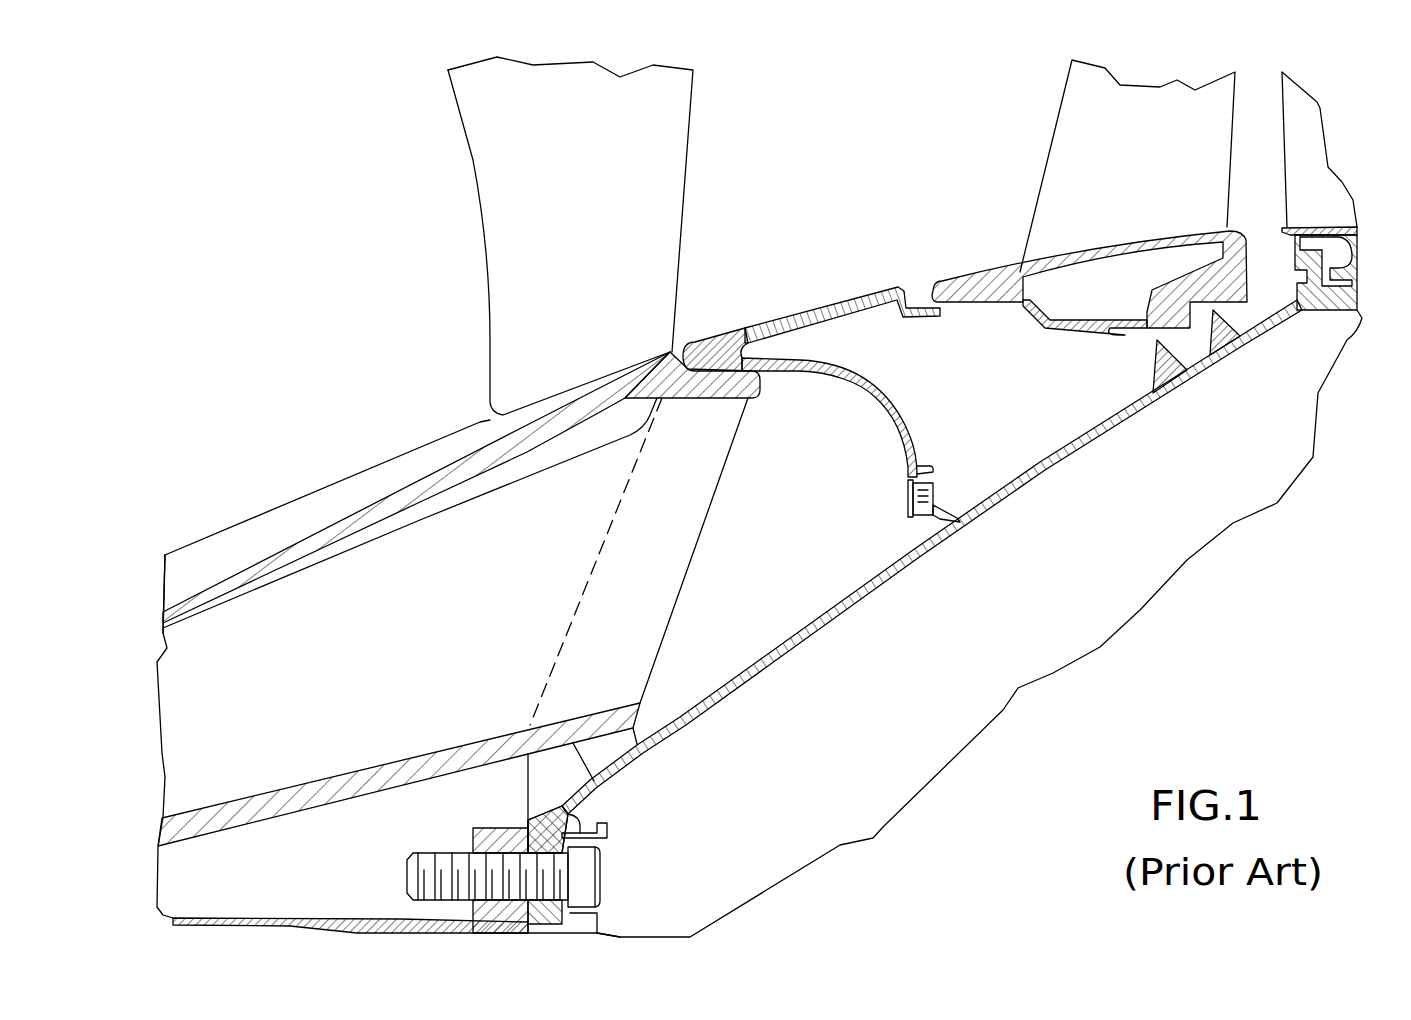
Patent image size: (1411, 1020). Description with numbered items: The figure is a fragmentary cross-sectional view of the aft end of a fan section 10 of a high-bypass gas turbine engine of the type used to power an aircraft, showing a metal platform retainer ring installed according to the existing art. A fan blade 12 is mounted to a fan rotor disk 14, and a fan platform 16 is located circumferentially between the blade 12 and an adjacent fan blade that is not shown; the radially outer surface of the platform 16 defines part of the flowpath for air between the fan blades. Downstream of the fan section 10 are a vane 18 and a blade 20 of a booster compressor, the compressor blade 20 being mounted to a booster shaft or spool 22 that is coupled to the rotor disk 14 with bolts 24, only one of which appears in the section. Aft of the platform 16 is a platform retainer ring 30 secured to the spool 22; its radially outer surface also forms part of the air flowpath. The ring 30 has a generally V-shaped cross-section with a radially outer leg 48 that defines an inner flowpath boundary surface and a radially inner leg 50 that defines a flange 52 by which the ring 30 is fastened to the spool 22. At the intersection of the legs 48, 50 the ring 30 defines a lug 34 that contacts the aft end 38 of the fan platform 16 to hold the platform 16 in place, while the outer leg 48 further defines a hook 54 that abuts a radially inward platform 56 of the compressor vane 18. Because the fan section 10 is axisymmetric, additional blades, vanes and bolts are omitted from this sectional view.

The fan section 10 is at (1245, 587).
The fan blade 12 is at (478, 162).
The fan rotor disk 14 is at (360, 918).
The fan platform 16 is at (402, 467).
The vane 18 is at (1072, 115).
The blade 20 is at (1310, 138).
The booster shaft or spool 22 is at (1057, 463).
The bolts 24 is at (590, 870).
The aft retainer ring 30 is at (855, 396).
The lug 34 is at (713, 337).
The aft end 38 is at (710, 388).
The radially outer leg 48 is at (837, 310).
The radially inner leg 50 is at (903, 423).
The flange 52 is at (910, 493).
The hook 54 is at (937, 315).
The radially inward platform 56 is at (970, 277).